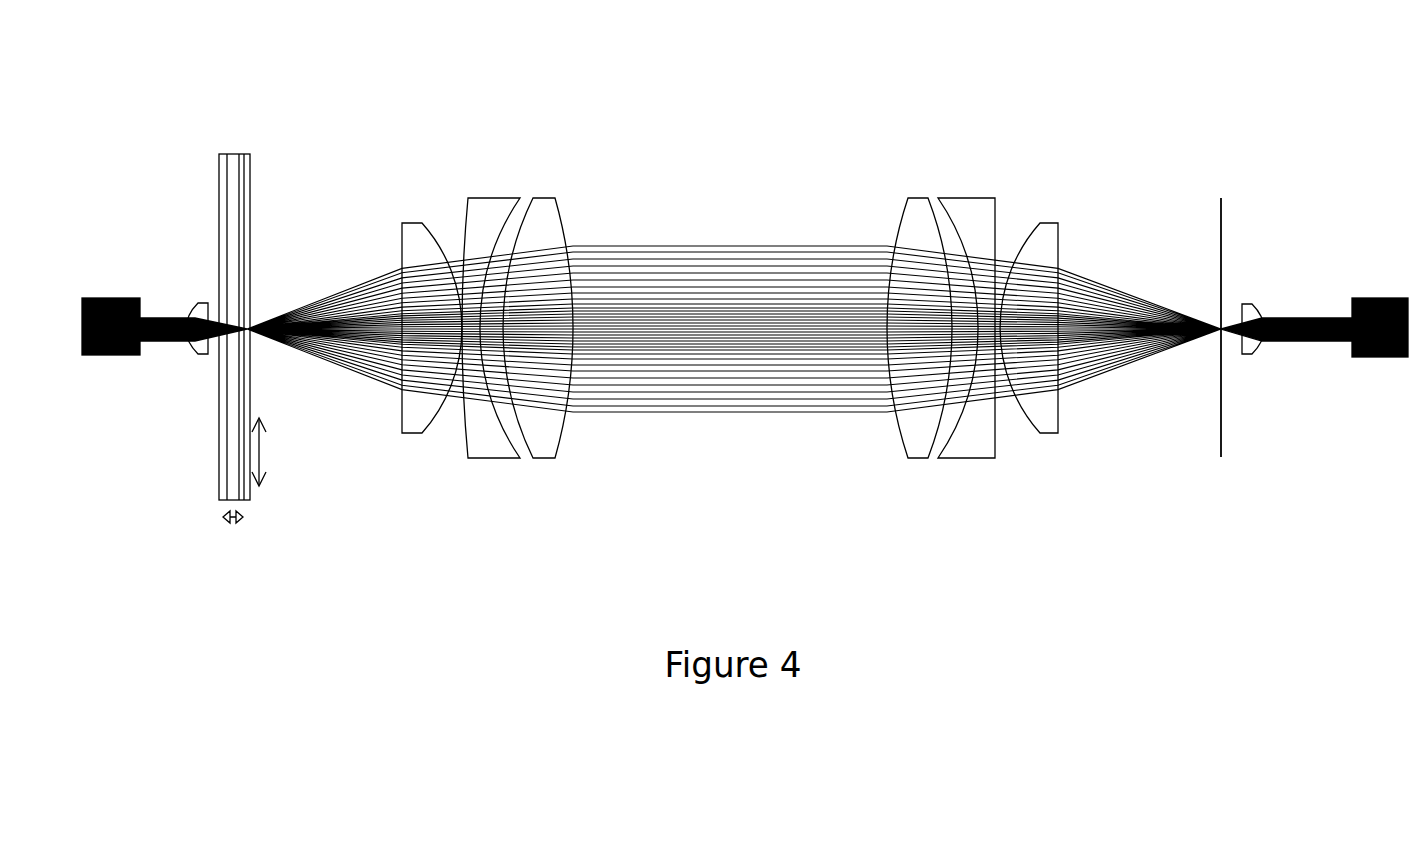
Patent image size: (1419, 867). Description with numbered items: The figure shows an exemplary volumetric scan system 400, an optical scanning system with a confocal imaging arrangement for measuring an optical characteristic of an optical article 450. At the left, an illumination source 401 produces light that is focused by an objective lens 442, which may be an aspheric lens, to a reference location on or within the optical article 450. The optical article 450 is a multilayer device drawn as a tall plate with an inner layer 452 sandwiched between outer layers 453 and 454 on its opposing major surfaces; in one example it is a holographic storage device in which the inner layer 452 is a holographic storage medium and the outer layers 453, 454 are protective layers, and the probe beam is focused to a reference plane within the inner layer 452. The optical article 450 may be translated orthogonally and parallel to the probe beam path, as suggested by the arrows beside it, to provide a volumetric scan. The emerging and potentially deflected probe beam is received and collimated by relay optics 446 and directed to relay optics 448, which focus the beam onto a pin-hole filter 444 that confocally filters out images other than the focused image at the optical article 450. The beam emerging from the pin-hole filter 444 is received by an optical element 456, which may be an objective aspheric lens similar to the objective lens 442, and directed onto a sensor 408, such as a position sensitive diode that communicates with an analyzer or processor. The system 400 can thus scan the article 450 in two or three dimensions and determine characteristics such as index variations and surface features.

The volumetric scan system 400 is at (418, 563).
The illumination source 401 is at (108, 293).
The sensor 408 is at (1372, 303).
The objective lens 442 is at (195, 353).
The pin-hole filter 444 is at (1220, 427).
The relay optics 446 is at (403, 178).
The relay optics 448 is at (1052, 178).
The optical article 450 is at (221, 128).
The inner layer 452 is at (234, 172).
The outer layer 453 is at (247, 198).
The outer layer 454 is at (220, 177).
The optical element 456 is at (1253, 347).